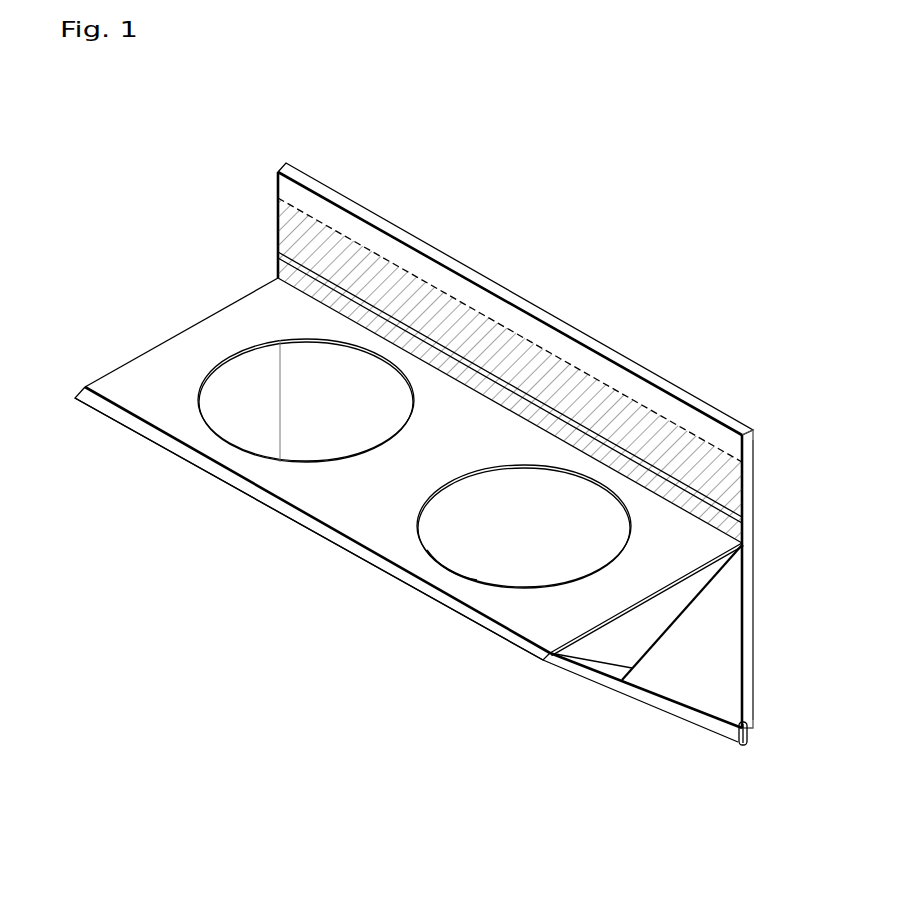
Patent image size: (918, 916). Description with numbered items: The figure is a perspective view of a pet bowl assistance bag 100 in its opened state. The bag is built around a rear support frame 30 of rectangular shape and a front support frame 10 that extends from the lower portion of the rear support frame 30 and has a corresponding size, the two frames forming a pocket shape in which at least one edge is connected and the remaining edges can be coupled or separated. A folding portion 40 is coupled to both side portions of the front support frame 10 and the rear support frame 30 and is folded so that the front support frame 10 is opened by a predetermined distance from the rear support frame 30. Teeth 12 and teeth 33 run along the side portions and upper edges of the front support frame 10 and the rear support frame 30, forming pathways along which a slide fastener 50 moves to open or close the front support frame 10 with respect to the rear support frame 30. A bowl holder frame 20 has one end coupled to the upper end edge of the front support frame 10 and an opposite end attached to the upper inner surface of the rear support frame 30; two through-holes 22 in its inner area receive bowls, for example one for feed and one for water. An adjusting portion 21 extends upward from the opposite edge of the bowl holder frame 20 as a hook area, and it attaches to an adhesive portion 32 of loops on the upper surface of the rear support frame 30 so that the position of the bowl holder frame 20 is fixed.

The pet bowl assistance bag 100 is at (101, 136).
The front support frame 10 is at (292, 541).
The teeth 12 is at (647, 691).
The bowl holder frame 20 is at (220, 302).
The adjusting portion 21 is at (290, 266).
The through-holes 22 is at (270, 393).
The rear support frame 30 is at (420, 220).
The adhesive portion 32 is at (507, 325).
The teeth 33 is at (743, 583).
The folding portion 40 is at (717, 642).
The slide fastener (zipper) 50 is at (750, 727).